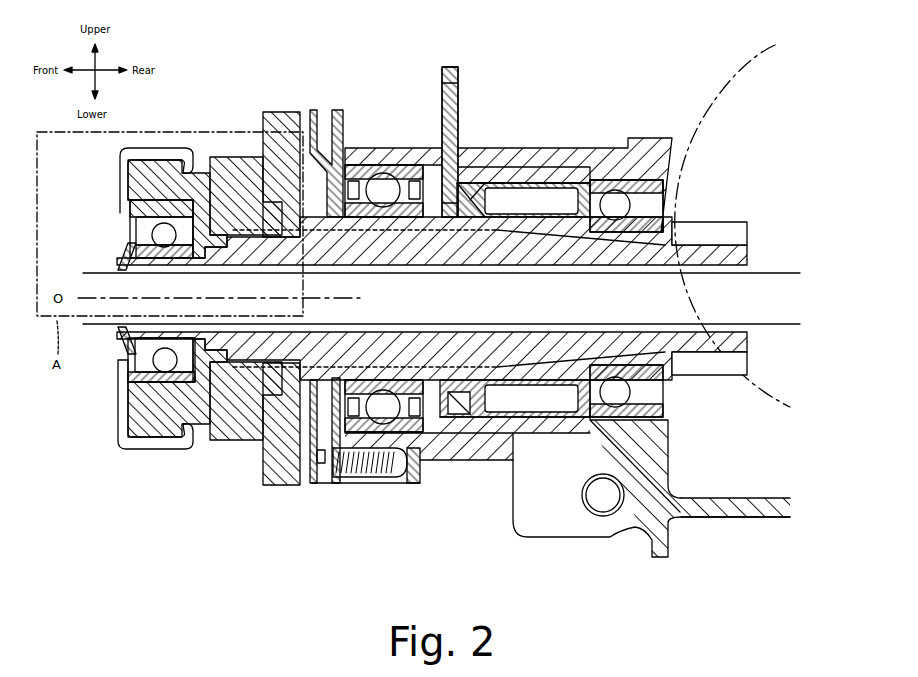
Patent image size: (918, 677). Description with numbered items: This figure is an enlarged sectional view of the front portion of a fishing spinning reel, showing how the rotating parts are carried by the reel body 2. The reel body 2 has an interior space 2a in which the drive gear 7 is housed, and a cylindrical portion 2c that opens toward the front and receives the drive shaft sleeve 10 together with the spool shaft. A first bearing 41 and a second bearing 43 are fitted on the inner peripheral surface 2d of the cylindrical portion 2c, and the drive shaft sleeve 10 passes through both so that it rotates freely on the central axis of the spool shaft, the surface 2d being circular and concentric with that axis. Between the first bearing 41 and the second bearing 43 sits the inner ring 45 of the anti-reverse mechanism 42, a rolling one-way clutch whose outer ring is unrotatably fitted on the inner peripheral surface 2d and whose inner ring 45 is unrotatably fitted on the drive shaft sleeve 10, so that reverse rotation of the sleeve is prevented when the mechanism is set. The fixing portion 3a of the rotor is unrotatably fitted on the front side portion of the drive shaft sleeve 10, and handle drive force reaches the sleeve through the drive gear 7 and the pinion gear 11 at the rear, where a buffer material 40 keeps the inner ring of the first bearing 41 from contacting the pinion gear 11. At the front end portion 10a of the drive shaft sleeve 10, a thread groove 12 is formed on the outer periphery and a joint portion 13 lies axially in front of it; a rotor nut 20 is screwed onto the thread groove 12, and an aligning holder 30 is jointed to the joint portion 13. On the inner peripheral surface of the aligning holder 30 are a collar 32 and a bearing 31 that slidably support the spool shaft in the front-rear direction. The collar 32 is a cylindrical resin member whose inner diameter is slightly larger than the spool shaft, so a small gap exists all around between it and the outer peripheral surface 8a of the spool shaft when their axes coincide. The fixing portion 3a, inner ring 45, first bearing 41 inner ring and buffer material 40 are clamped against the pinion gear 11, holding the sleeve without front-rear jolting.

The reel body 2 is at (745, 498).
The interior space 2a is at (672, 447).
The cylindrical portion 2c is at (478, 162).
The inner peripheral surface 2d is at (512, 172).
The fixing portion 3a is at (318, 153).
The drive gear 7 is at (700, 120).
The outer peripheral surface 8a is at (778, 271).
The drive shaft sleeve 10 is at (518, 248).
The flange portion of hollow shaft 10a is at (243, 156).
The pinion gear 11 is at (713, 237).
The thread groove 12 is at (248, 213).
The joint portion 13 is at (230, 213).
The rotor nut 20 is at (170, 148).
The aligning holder 30 is at (150, 183).
The bearing 31 is at (140, 218).
The collar 32 is at (160, 266).
The buffer material 40 is at (650, 246).
The first bearing 41 is at (621, 176).
The anti-reverse mechanism 42 is at (546, 168).
The second bearing 43 is at (395, 162).
The inner ring 45 is at (422, 220).